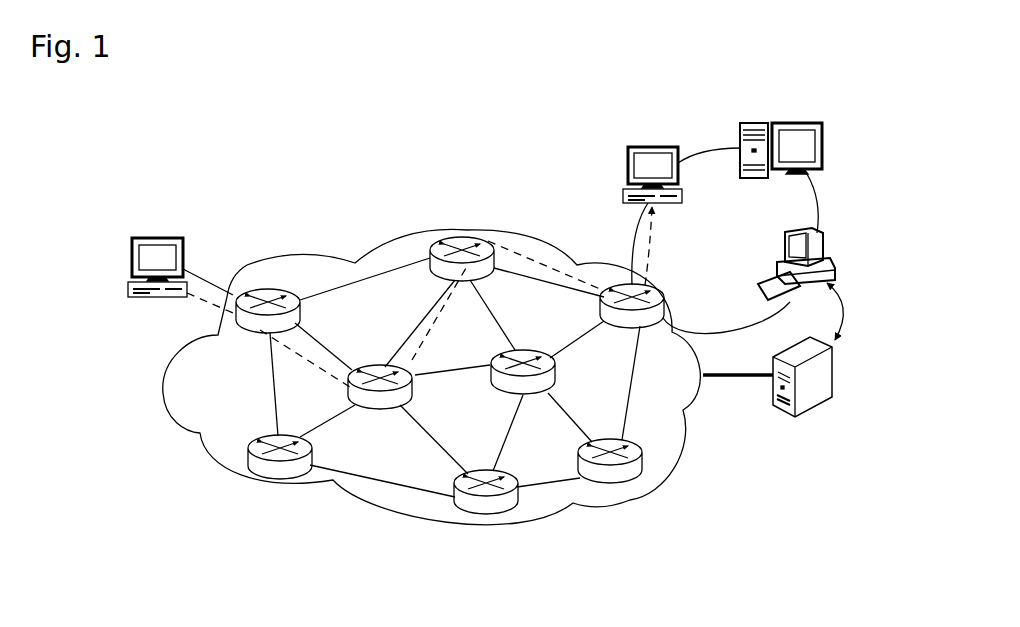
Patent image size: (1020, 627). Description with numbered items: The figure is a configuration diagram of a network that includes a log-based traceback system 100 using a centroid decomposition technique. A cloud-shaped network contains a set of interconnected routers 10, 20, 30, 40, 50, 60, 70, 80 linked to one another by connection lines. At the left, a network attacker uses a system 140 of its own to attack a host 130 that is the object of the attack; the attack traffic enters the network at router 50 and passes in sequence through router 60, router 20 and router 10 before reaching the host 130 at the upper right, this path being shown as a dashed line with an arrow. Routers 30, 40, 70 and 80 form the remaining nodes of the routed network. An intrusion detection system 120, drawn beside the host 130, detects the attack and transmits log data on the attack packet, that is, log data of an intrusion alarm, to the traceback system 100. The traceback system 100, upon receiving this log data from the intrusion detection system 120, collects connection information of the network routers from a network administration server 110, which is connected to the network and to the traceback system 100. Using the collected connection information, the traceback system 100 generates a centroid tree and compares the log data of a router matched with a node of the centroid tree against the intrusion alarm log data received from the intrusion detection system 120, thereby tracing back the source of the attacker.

The router 10 is at (622, 287).
The router 20 is at (470, 240).
The router 30 is at (555, 372).
The router 40 is at (630, 485).
The router 50 is at (256, 290).
The router 60 is at (385, 410).
The router 70 is at (495, 516).
The router 80 is at (283, 483).
The traceback system 100 is at (825, 248).
The network administration server 110 is at (832, 377).
The intrusion detection system 120 is at (740, 128).
The host 130 is at (625, 178).
The system 140 is at (127, 268).